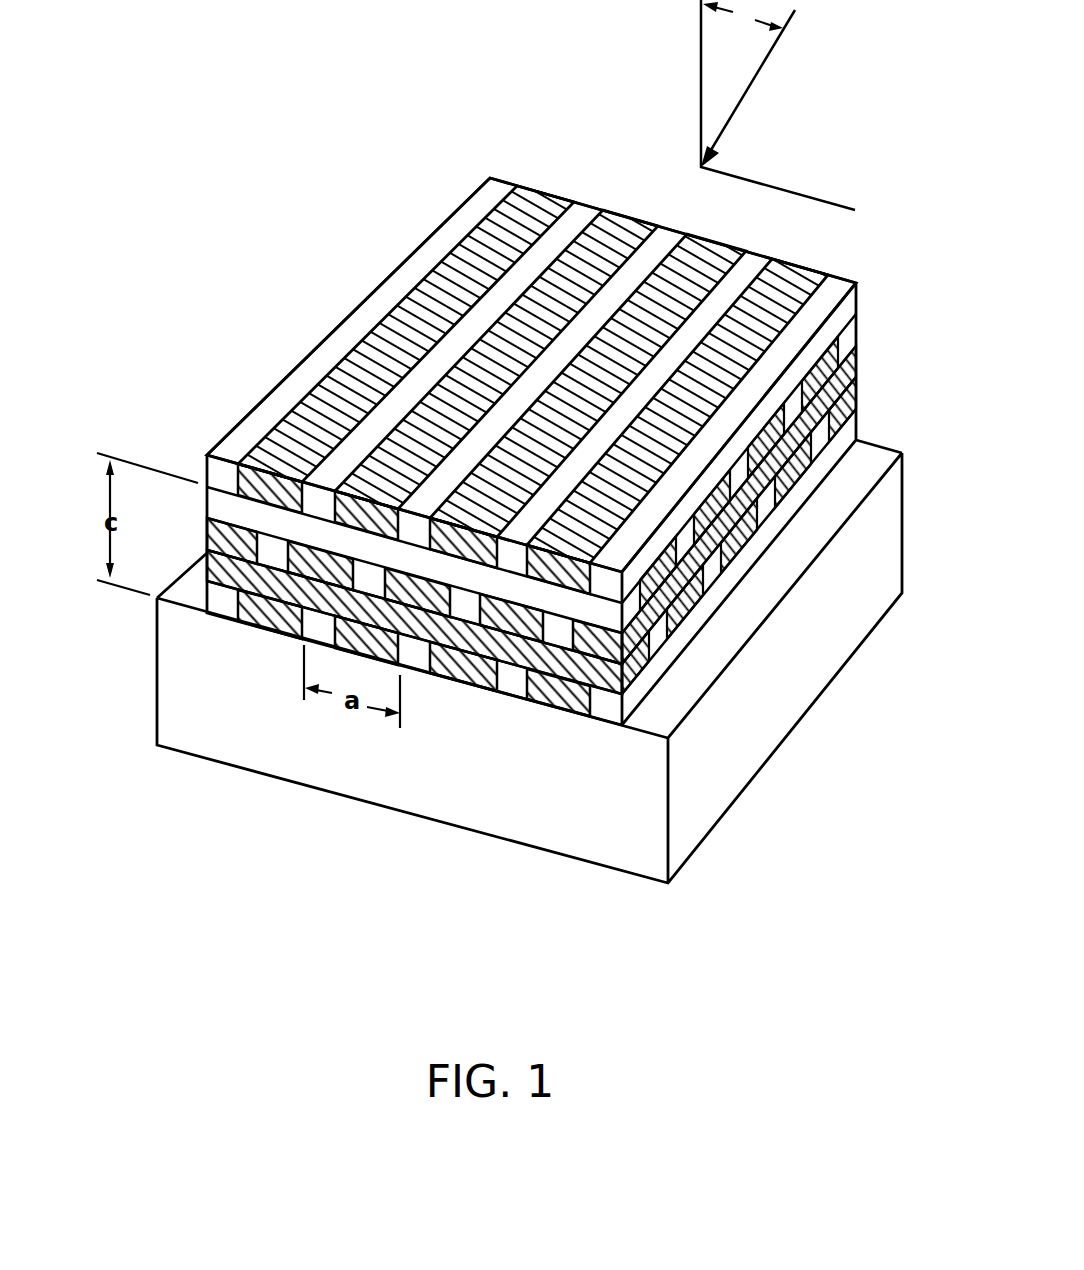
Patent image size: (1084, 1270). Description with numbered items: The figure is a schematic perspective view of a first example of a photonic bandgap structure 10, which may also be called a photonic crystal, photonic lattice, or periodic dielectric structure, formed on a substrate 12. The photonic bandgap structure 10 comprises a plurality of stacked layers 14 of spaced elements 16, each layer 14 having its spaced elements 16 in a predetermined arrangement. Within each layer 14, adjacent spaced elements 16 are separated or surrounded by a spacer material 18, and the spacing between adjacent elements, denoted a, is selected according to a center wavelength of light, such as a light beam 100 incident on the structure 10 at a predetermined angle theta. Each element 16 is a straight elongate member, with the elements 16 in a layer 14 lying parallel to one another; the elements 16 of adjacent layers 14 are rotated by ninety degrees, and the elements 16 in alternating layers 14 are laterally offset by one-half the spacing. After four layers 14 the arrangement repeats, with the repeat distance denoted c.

The photonic bandgap structure 10 is at (326, 300).
The substrate 12 is at (196, 703).
The stacked layers 14 is at (579, 429).
The spaced elements 16 is at (478, 203).
The spacer material 18 is at (600, 248).
The light beam 100 is at (766, 60).